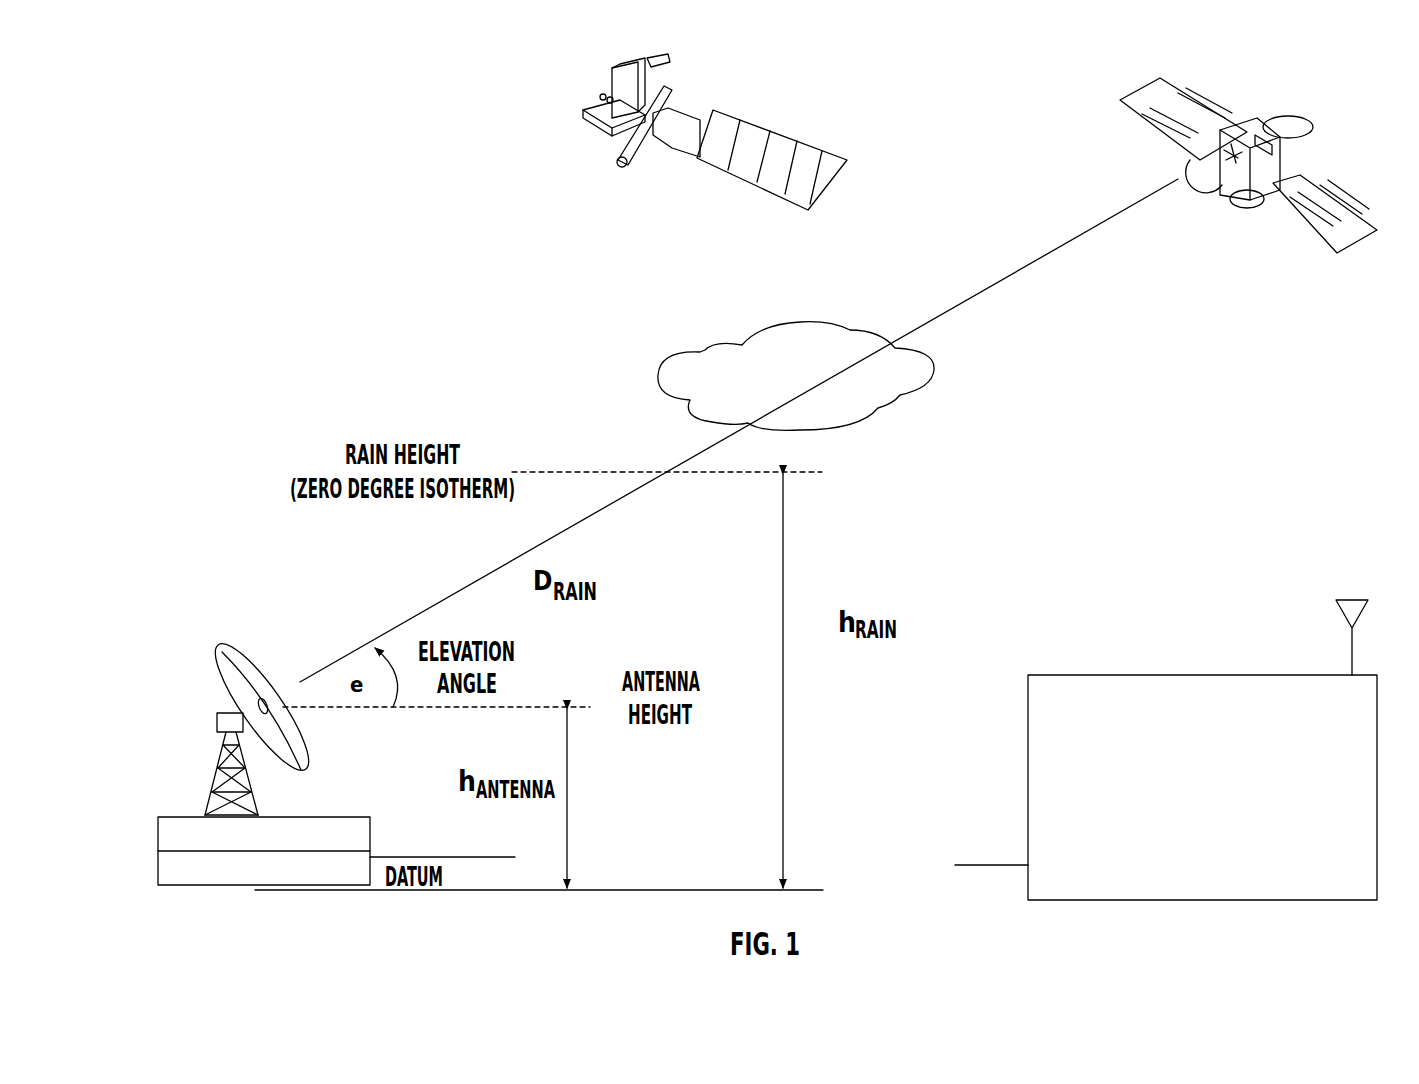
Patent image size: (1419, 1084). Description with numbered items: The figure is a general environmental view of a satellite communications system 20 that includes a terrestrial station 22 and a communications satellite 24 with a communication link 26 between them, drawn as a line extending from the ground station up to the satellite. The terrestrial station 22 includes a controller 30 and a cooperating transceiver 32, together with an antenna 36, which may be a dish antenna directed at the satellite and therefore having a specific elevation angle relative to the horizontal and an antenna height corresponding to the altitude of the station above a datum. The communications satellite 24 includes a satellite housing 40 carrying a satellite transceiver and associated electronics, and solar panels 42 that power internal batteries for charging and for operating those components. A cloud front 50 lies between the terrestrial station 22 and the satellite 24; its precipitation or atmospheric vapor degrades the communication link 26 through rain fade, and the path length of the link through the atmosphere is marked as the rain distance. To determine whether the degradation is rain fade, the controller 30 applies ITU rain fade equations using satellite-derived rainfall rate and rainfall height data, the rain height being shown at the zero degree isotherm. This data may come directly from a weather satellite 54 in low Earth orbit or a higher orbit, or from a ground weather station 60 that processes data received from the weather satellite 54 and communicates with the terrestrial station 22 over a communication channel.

The satellite communications system 20 is at (1238, 458).
The terrestrial station 22 is at (180, 738).
The communications satellite 24 is at (1282, 96).
The communication link 26 is at (963, 305).
The controller 30 is at (340, 875).
The transceiver 32 is at (363, 832).
The antenna 36 is at (236, 648).
The satellite housing 40 is at (1278, 157).
The solar panels 42 is at (1338, 214).
The cloud front 50 is at (875, 407).
The weather satellite 54 is at (660, 85).
The weather station 60 is at (1115, 675).